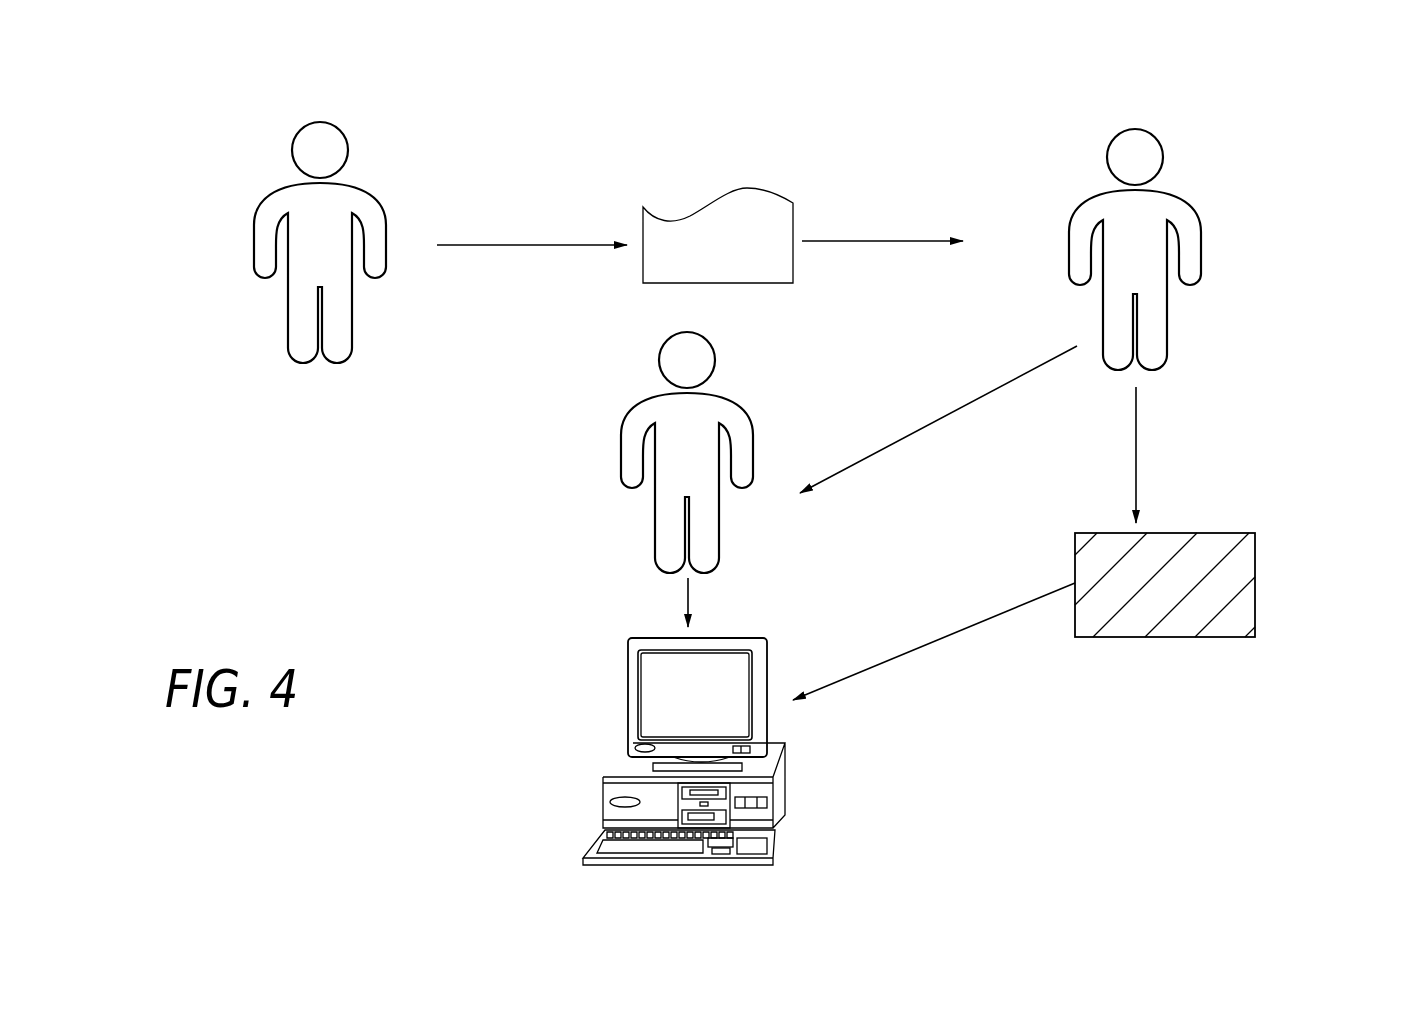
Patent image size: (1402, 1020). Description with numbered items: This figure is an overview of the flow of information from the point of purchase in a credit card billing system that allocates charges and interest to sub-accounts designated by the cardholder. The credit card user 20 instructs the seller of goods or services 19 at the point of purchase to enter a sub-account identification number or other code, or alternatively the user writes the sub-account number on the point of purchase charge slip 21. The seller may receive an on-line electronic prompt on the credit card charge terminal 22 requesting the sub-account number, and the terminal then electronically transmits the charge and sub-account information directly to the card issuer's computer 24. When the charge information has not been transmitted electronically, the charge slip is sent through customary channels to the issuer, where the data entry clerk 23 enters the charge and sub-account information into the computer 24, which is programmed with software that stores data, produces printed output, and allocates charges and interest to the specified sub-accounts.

The seller of goods or services 19 is at (1137, 128).
The credit card user 20 is at (321, 122).
The point of purchase charge slip 21 is at (750, 189).
The credit card charge terminal 22 is at (1182, 678).
The data entry clerk 23 is at (586, 472).
The computer 24 is at (628, 697).